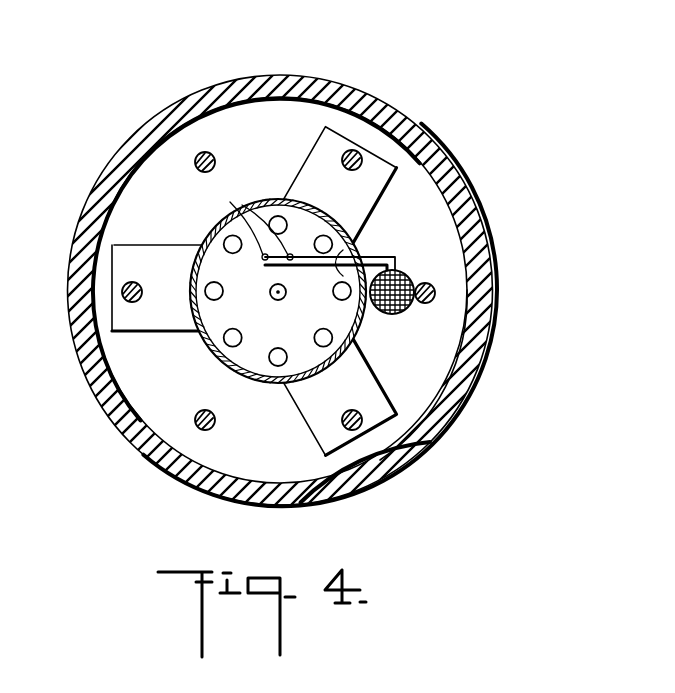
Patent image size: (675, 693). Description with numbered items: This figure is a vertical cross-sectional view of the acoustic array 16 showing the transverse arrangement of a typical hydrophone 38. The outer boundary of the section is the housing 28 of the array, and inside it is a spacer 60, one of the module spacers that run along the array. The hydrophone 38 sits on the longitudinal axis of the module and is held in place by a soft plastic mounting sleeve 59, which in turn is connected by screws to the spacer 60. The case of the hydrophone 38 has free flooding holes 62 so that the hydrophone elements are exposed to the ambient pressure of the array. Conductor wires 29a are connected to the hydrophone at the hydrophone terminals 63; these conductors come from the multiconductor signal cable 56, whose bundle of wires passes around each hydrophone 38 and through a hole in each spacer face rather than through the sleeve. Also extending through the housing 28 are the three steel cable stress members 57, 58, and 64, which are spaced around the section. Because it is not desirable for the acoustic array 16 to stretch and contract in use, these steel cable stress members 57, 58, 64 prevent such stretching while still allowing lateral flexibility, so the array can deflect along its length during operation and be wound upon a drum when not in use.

The acoustic array 16 is at (435, 450).
The housing 28 is at (271, 76).
The conductor wires 29a is at (378, 262).
The hydrophone 38 is at (268, 329).
The multiconductor signal cable 56 is at (409, 270).
The steel cable stress member 57 is at (425, 305).
The steel cable stress member 58 is at (203, 407).
The plastic mounting sleeve 59 is at (275, 196).
The spacers 60 is at (448, 248).
The free flooding holes 62 is at (224, 242).
The hydrophone terminals 63 is at (238, 212).
The steel cable stress member 64 is at (217, 152).